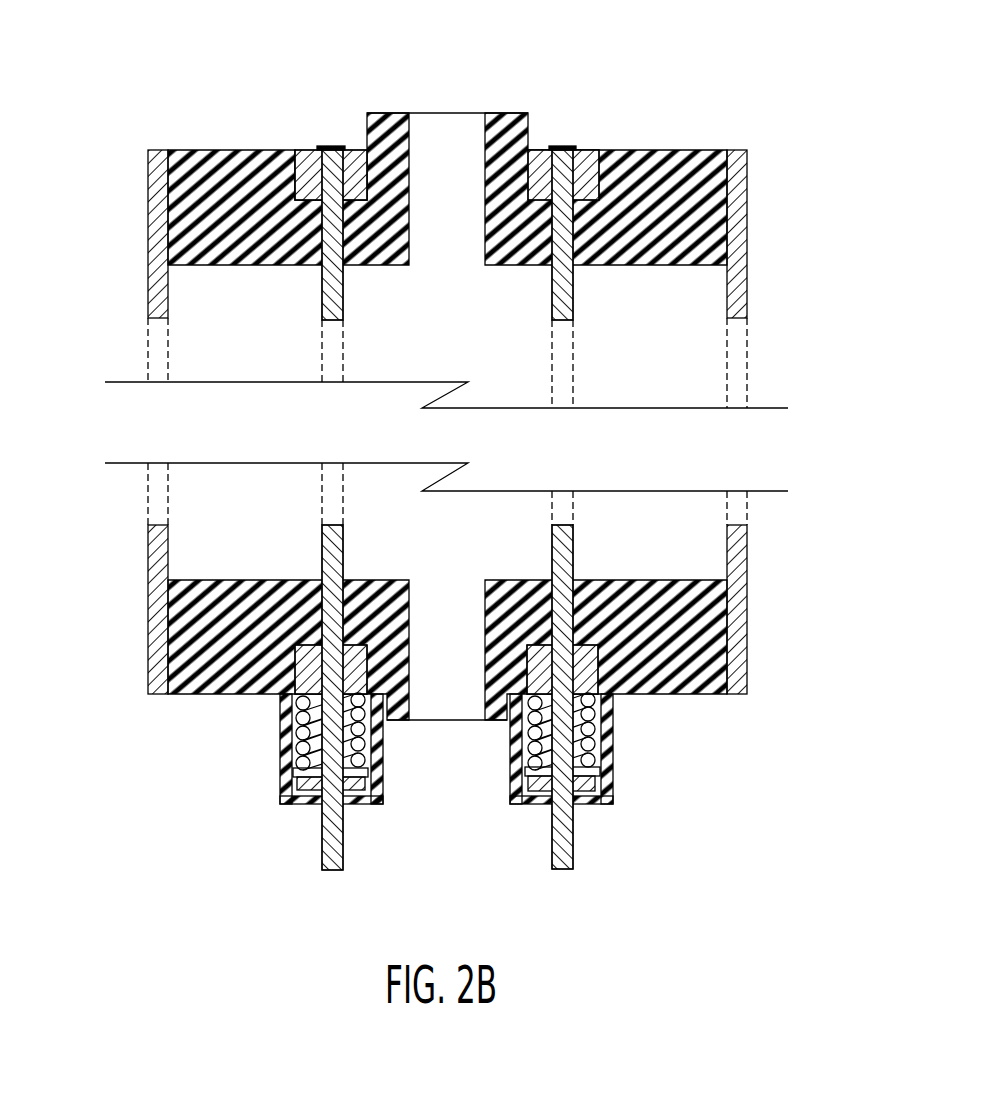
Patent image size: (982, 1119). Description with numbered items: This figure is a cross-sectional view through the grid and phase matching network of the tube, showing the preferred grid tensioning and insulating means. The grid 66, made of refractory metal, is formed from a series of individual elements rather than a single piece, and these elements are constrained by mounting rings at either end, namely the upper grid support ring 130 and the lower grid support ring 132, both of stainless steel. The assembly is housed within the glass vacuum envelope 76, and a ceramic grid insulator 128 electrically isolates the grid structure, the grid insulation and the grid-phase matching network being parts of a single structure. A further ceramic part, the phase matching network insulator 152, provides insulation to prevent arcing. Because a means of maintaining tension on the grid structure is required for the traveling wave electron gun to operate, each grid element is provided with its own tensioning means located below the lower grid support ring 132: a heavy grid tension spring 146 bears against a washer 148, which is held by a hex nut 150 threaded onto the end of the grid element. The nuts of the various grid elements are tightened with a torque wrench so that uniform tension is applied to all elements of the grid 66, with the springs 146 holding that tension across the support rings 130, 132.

The grid 66 is at (316, 158).
The glass vacuum envelope 76 is at (747, 297).
The grid insulator 128 is at (174, 202).
The upper grid support ring 130 is at (353, 148).
The lower grid support ring 132 is at (287, 672).
The grid tension spring 146 is at (602, 733).
The washer 148 is at (604, 773).
The hex nut 150 is at (585, 793).
The phase matching network insulator 152 is at (615, 795).